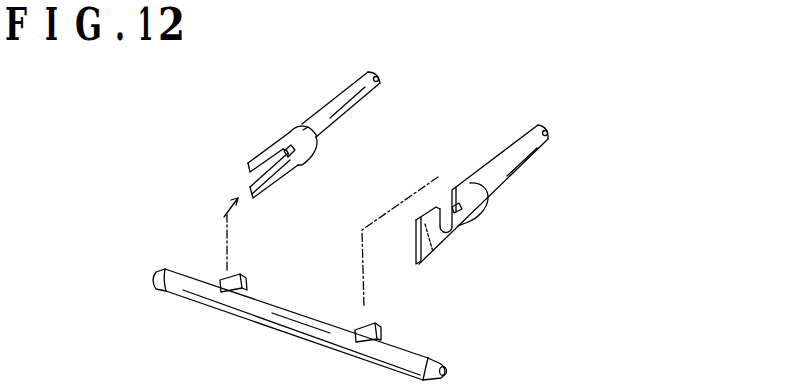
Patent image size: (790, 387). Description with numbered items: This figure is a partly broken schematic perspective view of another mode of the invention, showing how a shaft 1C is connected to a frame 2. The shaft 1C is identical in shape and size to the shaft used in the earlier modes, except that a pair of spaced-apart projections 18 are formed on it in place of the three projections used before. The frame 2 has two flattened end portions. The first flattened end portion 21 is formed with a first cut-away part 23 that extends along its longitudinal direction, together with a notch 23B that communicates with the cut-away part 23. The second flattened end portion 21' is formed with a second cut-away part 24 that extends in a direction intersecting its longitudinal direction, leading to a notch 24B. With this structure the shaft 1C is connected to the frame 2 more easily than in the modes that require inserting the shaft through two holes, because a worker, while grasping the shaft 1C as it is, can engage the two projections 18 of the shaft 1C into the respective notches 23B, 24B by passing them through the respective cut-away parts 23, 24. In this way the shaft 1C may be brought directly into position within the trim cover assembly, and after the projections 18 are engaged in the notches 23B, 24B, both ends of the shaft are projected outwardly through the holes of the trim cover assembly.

The shaft 1C is at (268, 315).
The frame 2 is at (333, 103).
The projections 18 is at (233, 280).
The first flattened end portion 21 is at (266, 143).
The second flattened end portion 21' is at (452, 251).
The first cut-away part 23 is at (249, 181).
The notch 23B is at (291, 154).
The second cut-away part 24 is at (443, 210).
The notch 24B is at (458, 214).